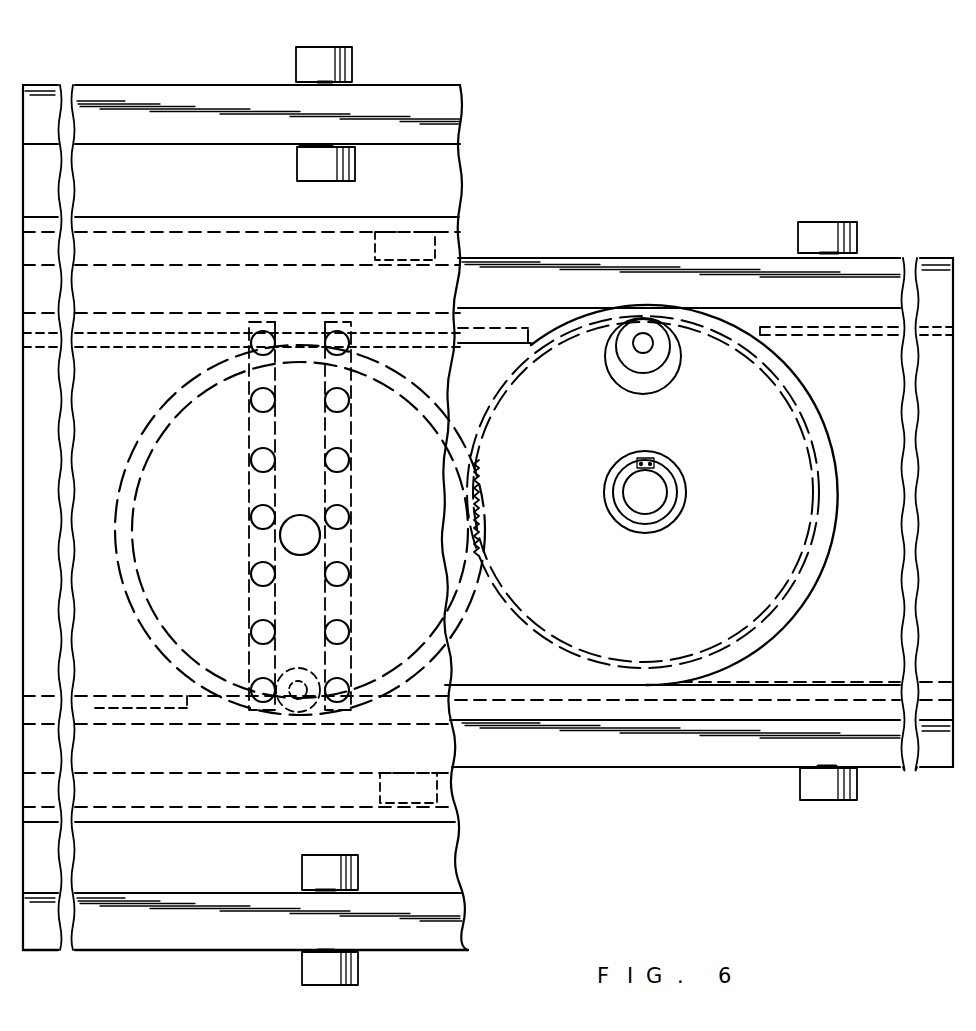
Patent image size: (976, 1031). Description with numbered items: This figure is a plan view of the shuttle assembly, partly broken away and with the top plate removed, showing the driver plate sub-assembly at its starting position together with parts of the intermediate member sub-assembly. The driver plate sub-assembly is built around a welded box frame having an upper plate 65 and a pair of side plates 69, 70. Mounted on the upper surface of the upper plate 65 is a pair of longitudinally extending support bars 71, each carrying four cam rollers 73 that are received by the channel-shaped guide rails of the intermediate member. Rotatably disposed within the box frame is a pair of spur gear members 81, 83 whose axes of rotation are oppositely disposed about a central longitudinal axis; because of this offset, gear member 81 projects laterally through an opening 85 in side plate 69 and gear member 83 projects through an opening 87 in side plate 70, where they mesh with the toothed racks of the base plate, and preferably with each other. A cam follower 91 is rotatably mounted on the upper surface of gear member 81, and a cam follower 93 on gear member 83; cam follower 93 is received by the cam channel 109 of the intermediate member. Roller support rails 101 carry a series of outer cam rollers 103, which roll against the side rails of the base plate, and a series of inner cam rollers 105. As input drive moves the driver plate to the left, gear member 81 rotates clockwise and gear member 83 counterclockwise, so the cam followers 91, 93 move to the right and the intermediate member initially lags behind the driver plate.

The upper plate 65 is at (709, 495).
The side plate 69 is at (158, 336).
The side plate 70 is at (108, 704).
The support bar 71 is at (699, 514).
The cam roller 73 is at (418, 245).
The spur gear member 81 is at (564, 650).
The spur gear member 83 is at (473, 578).
The opening 85 is at (528, 332).
The opening 87 is at (409, 700).
The cam follower 91 is at (625, 355).
The cam follower 93 is at (302, 666).
The roller support rail 101 is at (241, 91).
The outer cam roller 103 is at (330, 52).
The inner cam roller 105 is at (300, 155).
The cam channel 109 is at (250, 478).